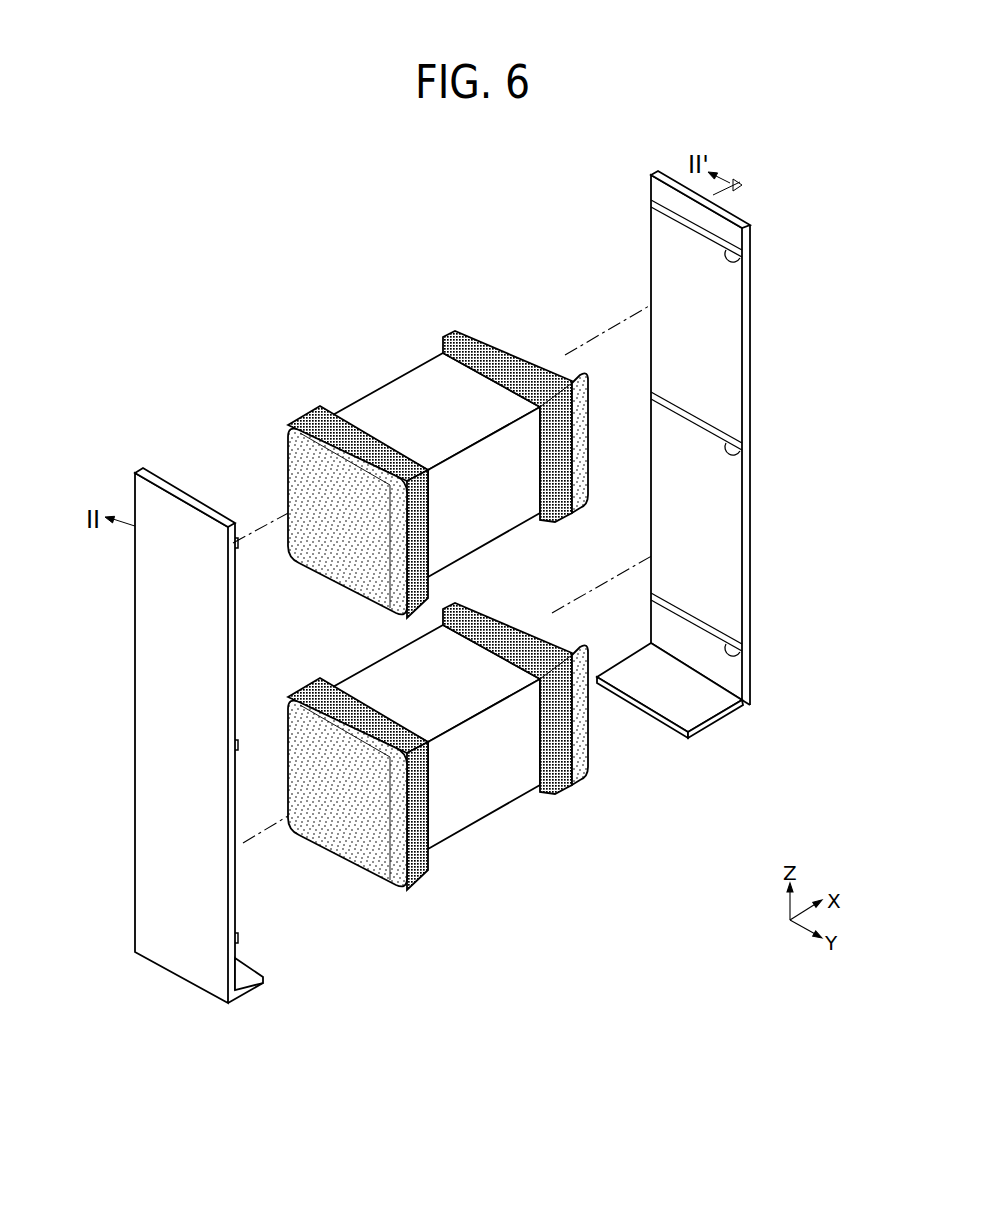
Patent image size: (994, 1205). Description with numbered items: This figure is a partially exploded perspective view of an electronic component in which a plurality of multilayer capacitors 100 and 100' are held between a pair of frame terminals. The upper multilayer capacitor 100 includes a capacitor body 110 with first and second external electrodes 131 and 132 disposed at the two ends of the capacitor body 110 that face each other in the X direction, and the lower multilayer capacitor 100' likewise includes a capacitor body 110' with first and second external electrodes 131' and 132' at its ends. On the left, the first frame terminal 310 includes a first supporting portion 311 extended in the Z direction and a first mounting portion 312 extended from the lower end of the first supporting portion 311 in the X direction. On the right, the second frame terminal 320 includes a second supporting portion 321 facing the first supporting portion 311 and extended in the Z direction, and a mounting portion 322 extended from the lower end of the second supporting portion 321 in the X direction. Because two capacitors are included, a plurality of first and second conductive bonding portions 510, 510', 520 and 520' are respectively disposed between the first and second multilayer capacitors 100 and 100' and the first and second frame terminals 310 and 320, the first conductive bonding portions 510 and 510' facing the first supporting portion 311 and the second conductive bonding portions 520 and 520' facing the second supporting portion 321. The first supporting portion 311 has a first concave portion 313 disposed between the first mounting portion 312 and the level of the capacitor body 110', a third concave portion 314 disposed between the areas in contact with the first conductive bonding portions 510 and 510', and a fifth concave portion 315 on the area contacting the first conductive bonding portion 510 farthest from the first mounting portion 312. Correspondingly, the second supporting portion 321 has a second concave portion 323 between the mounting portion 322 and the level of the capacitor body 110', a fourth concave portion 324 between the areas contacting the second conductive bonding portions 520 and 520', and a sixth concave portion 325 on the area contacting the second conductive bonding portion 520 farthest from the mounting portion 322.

The multilayer capacitor 100 is at (403, 434).
The capacitor body 110 is at (433, 461).
The first external electrode 131 is at (349, 491).
The second external electrode 132 is at (507, 392).
The first conductive bonding portion 510 is at (312, 516).
The second conductive bonding portion 520 is at (537, 381).
The multilayer capacitor 100' is at (481, 771).
The capacitor body 110' is at (454, 782).
The first external electrode 131' is at (385, 808).
The second external electrode 132' is at (541, 723).
The first conductive bonding portion 510' is at (348, 817).
The second conductive bonding portion 520' is at (623, 715).
The first frame terminal 310 is at (256, 755).
The first supporting portion 311 is at (197, 958).
The first mounting portion 312 is at (243, 973).
The first concave portion 313 is at (238, 938).
The third concave portion 314 is at (238, 746).
The fifth concave portion 315 is at (238, 546).
The second frame terminal 320 is at (727, 454).
The second supporting portion 321 is at (752, 672).
The mounting portion 322 is at (707, 702).
The second concave portion 323 is at (745, 648).
The fourth concave portion 324 is at (748, 450).
The sixth concave portion 325 is at (730, 231).